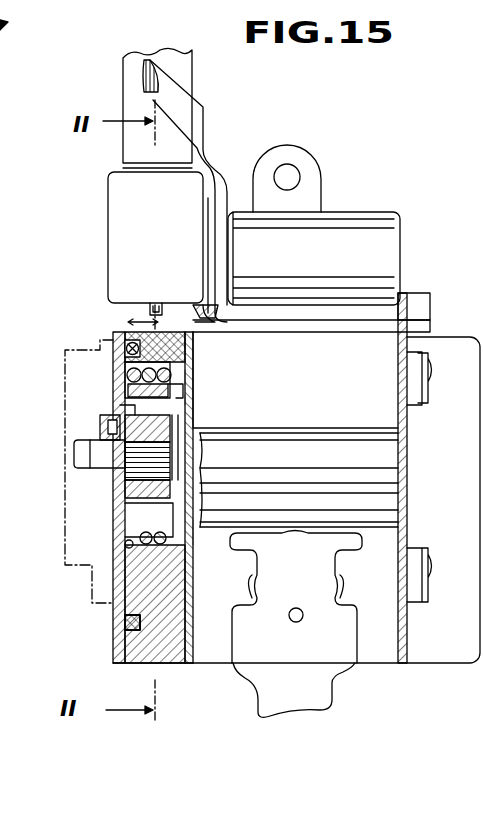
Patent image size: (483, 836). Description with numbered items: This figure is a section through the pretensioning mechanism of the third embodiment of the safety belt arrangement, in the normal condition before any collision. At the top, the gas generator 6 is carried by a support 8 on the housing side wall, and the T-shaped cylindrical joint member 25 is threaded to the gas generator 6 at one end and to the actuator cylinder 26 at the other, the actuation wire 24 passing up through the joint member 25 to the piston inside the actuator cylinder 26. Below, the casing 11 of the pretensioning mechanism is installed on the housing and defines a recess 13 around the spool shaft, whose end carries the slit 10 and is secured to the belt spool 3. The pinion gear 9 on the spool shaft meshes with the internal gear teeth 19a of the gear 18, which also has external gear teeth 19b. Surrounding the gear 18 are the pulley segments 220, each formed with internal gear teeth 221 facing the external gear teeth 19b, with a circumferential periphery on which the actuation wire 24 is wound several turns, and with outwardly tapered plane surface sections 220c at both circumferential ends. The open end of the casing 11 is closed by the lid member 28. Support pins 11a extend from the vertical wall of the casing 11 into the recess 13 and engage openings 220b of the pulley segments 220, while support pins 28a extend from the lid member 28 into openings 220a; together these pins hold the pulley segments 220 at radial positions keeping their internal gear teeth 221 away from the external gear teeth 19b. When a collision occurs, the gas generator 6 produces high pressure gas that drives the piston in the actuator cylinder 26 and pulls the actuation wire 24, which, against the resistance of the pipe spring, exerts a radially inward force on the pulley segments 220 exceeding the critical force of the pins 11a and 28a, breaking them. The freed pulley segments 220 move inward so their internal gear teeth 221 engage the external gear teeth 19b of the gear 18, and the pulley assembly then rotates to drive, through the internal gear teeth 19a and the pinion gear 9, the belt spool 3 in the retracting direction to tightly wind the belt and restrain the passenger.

The belt spool 3 is at (330, 428).
The gas generator 6 is at (348, 212).
The support 8 is at (190, 106).
The pinion gear 9 is at (200, 474).
The slit 10 is at (78, 456).
The casing 11 is at (163, 658).
The support pins 11a is at (195, 402).
The recess 13 is at (125, 546).
The gear 18 is at (122, 494).
The internal gear teeth 19a is at (200, 446).
The external gear teeth 19b is at (193, 535).
The actuation wire 24 is at (124, 344).
The joint member 25 is at (108, 190).
The actuator cylinder 26 is at (130, 78).
The lid member 28 is at (118, 623).
The support pins 28a is at (115, 386).
The pulley segments 220 is at (195, 362).
The openings 220a is at (112, 334).
The openings 220b is at (195, 388).
The plane surface sections 220c is at (130, 521).
The internal gear teeth 221 is at (110, 421).